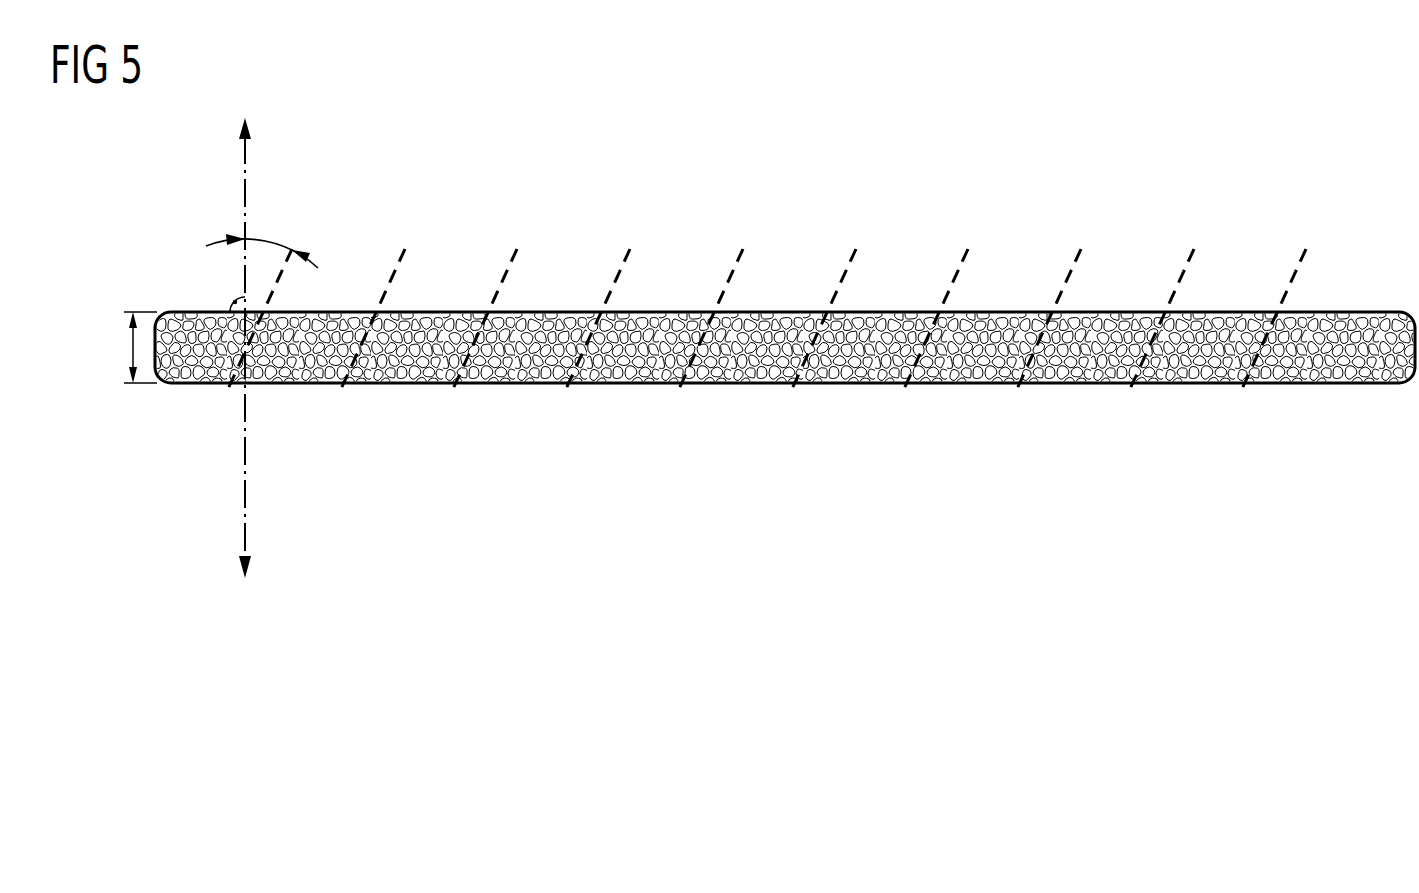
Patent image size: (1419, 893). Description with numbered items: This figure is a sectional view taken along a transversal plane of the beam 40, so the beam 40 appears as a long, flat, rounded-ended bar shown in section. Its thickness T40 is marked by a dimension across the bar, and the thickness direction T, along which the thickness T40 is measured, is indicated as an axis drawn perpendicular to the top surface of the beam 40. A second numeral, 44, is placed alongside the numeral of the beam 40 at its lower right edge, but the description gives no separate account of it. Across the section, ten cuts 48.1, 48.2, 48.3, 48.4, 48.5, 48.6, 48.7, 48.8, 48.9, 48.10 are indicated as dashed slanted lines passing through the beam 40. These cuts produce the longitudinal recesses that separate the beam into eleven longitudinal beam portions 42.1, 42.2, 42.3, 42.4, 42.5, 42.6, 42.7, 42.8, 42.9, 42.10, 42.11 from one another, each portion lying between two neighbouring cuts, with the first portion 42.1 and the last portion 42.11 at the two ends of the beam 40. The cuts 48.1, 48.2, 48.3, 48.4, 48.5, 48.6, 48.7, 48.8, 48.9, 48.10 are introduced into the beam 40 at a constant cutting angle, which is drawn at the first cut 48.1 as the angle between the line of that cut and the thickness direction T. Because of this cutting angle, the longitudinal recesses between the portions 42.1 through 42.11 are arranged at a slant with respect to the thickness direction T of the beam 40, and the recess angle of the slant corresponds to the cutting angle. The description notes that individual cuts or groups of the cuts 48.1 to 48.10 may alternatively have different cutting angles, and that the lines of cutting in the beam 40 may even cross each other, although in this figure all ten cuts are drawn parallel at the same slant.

The beam 40 is at (785, 393).
The green body / ceramic sheet 44 is at (1347, 387).
The longitudinal beam portion 42.1 is at (187, 337).
The longitudinal beam portion 42.2 is at (338, 338).
The longitudinal beam portion 42.3 is at (451, 338).
The longitudinal beam portion 42.4 is at (564, 338).
The longitudinal beam portion 42.5 is at (676, 338).
The longitudinal beam portion 42.6 is at (789, 338).
The longitudinal beam portion 42.7 is at (902, 338).
The longitudinal beam portion 42.8 is at (1014, 338).
The longitudinal beam portion 42.9 is at (1127, 338).
The longitudinal beam portion 42.10 is at (1240, 338).
The longitudinal beam portion 42.11 is at (1352, 338).
The cut 48.1 is at (221, 396).
The cut 48.2 is at (334, 396).
The cut 48.3 is at (446, 396).
The cut 48.4 is at (559, 396).
The cut 48.5 is at (672, 396).
The cut 48.6 is at (785, 396).
The cut 48.7 is at (897, 396).
The cut 48.8 is at (1010, 396).
The cut 48.9 is at (1123, 396).
The cut 48.10 is at (1235, 396).
The thickness direction T is at (242, 183).
The thickness of the beam T40 is at (126, 344).